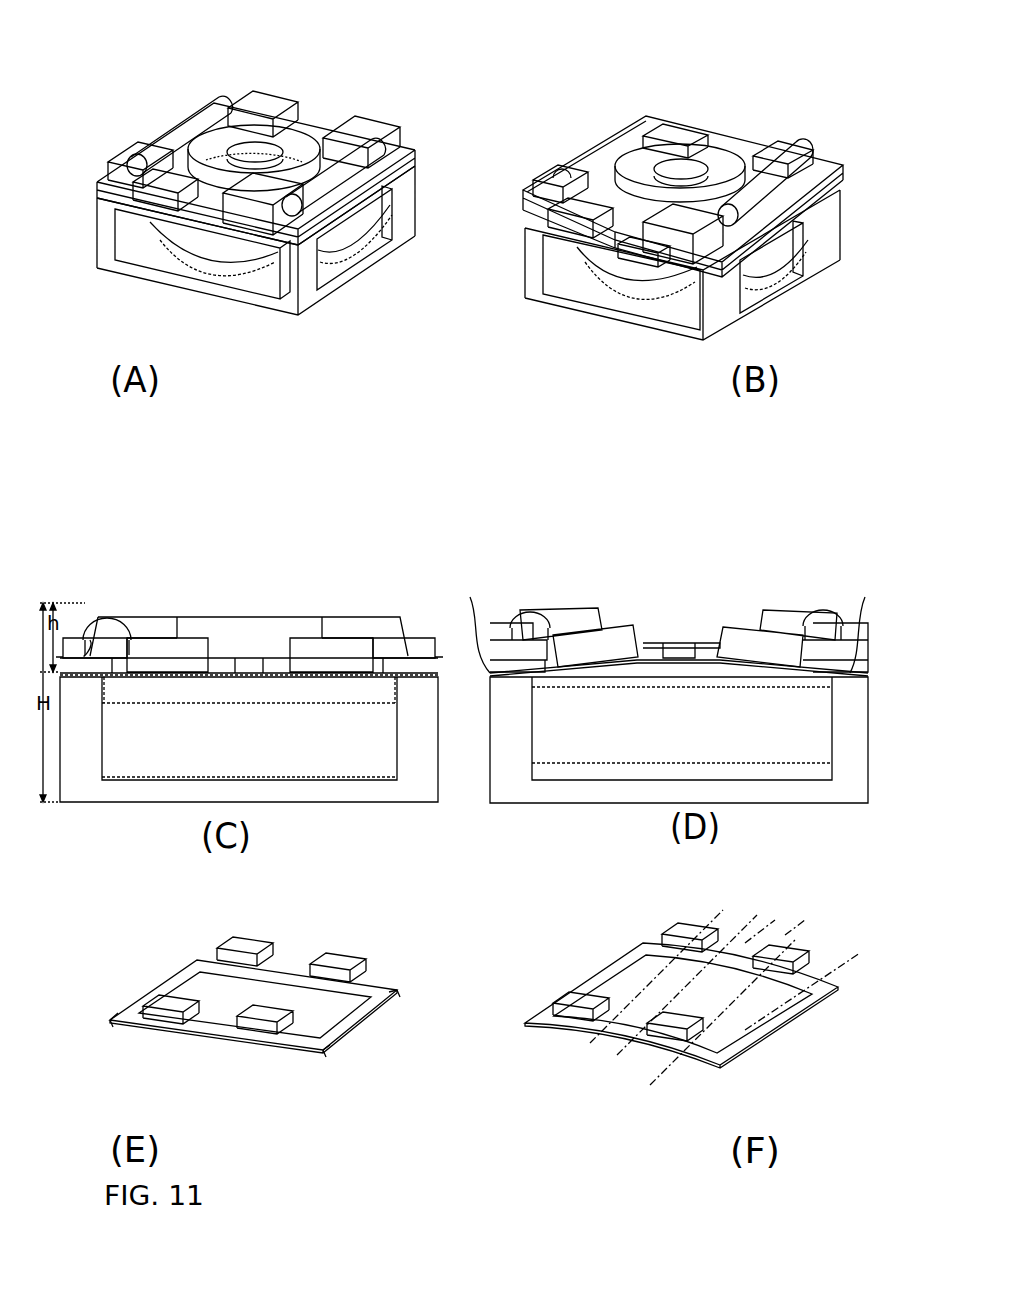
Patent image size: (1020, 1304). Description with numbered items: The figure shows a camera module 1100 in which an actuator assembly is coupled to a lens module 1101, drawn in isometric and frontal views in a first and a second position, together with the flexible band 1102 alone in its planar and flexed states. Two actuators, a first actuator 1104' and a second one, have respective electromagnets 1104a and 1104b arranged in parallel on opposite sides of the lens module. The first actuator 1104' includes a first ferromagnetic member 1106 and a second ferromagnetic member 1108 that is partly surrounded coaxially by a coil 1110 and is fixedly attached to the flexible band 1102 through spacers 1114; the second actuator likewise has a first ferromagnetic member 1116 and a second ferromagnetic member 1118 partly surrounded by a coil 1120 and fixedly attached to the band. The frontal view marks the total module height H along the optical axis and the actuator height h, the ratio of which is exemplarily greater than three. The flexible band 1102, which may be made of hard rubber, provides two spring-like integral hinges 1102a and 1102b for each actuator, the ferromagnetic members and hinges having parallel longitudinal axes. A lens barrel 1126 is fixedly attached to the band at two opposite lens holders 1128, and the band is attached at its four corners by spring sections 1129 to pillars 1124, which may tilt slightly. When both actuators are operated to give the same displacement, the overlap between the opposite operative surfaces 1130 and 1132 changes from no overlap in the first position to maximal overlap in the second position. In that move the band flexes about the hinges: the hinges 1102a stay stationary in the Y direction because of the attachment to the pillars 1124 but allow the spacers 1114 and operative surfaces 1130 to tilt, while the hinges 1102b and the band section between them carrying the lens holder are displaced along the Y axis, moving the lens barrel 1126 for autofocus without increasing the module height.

The camera module 1100 is at (467, 34).
The lens module 1101 is at (815, 750).
The flexible band 1102 is at (365, 677).
The integral hinge 1102a is at (555, 1025).
The integral hinge 1102b is at (615, 1032).
The electromagnet 1104a is at (105, 105).
The electromagnet 1104b is at (373, 130).
The first actuator 1104' is at (110, 606).
The first ferromagnetic member 1106 is at (98, 173).
The second ferromagnetic member 1108 is at (140, 170).
The coil 1110 is at (200, 117).
The spacer 1114 is at (190, 666).
The first ferromagnetic member 1116 is at (830, 185).
The second ferromagnetic member 1118 is at (805, 160).
The coil 1120 is at (781, 165).
The pillar 1124 is at (108, 253).
The lens barrel 1126 is at (722, 165).
The lens holder 1128 is at (650, 258).
The spring section 1129 is at (112, 1020).
The operative surface 1130 is at (105, 617).
The operative surface 1132 is at (90, 650).